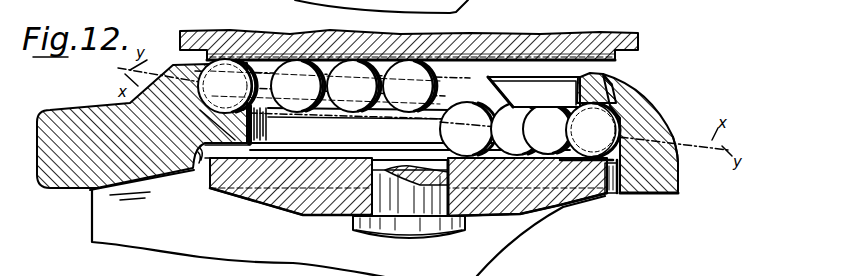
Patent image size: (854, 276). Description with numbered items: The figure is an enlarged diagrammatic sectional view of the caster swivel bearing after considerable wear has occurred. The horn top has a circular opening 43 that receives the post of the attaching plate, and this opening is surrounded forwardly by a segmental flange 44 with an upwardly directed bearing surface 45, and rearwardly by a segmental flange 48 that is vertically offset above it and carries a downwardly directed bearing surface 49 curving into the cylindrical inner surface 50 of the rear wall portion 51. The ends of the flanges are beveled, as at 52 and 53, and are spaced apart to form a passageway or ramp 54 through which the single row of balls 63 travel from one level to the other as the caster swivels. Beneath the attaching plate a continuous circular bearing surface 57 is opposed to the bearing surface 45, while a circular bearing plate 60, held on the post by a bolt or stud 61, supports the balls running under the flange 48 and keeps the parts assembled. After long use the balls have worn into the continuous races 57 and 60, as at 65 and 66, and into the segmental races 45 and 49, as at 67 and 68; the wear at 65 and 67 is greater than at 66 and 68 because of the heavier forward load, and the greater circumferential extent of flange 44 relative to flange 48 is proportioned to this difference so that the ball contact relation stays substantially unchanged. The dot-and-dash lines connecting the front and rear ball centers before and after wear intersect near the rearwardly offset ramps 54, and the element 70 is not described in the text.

The circular opening 43 is at (250, 116).
The segmental flange 44 is at (228, 128).
The bearing surface 45 is at (268, 116).
The segmental flange 48 is at (599, 96).
The bearing surface 49 is at (562, 112).
The cylindrical inner surface 50 is at (670, 175).
The rear wall portion 51 is at (662, 153).
The beveled end 52 is at (441, 123).
The beveled end 53 is at (498, 100).
The passageway or ramp 54 is at (462, 92).
The continuous circular bearing surface 57 is at (322, 60).
The circular bearing plate 60 is at (584, 177).
The bolt or stud 61 is at (402, 210).
The balls 63 is at (617, 120).
The wear 65 is at (233, 60).
The wear 66 is at (228, 162).
The wear 67 is at (200, 147).
The wear 68 is at (586, 103).
The housing member 70 is at (56, 137).